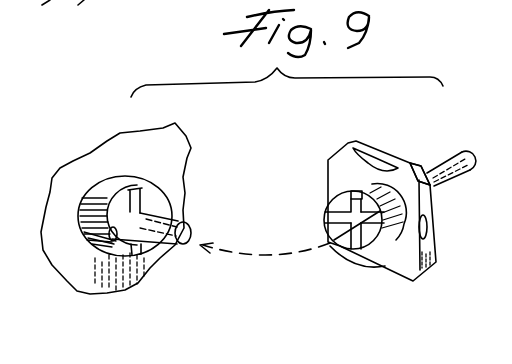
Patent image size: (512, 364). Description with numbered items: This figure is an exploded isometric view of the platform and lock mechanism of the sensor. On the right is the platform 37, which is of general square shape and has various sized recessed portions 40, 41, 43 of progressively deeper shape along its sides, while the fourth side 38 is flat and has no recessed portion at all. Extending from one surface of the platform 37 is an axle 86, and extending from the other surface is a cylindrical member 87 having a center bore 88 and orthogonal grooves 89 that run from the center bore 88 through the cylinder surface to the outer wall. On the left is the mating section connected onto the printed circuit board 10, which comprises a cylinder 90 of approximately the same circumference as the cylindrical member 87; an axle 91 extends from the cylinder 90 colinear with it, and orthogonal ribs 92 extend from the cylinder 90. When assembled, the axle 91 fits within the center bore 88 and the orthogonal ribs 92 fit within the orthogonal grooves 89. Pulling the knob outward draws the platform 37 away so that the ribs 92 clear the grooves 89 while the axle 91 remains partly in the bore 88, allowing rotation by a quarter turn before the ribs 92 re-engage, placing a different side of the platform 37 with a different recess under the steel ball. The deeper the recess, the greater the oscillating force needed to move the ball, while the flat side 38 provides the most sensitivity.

The printed circuit board 10 is at (120, 146).
The cylinder 90 is at (97, 192).
The orthogonal ribs 92 is at (135, 185).
The axle 91 is at (190, 225).
The fourth side 38 is at (325, 180).
The recessed portion 43 is at (373, 157).
The platform 37 is at (404, 167).
The axle 86 is at (438, 162).
The recessed portion 41 is at (428, 226).
The recessed portion 40 is at (373, 268).
The center bore 88 is at (328, 244).
The cylindrical member 87 is at (350, 256).
The orthogonal grooves 89 is at (390, 250).